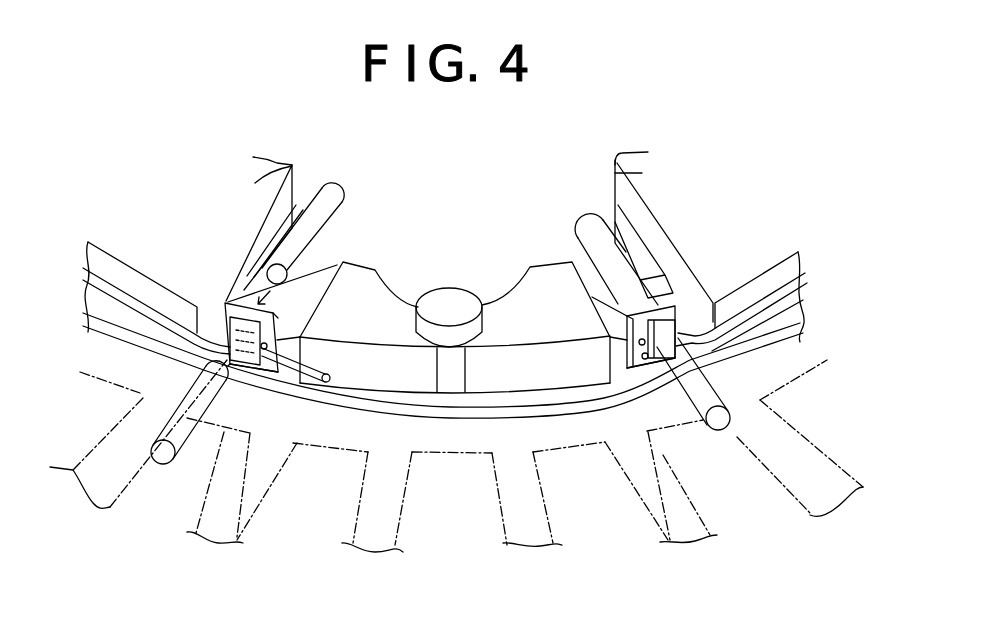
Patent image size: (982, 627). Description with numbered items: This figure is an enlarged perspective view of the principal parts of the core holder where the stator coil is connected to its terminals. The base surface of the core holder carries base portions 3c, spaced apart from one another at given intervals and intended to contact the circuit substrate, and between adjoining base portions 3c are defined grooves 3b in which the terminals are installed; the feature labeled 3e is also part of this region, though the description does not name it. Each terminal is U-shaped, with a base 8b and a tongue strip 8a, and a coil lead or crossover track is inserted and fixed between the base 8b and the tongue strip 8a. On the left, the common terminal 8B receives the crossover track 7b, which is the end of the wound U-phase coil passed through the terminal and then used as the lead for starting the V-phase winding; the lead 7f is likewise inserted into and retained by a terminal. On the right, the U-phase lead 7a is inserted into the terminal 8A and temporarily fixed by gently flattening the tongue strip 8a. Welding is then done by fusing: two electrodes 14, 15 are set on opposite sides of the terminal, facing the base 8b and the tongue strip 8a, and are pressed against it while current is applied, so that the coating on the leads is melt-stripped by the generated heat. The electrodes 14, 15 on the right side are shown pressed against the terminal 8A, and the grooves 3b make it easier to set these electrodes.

The groove 3b is at (298, 312).
The base portion 3c is at (291, 170).
The cylindrical boss 3e is at (447, 310).
The electrode 14 is at (333, 210).
The electrode 15 is at (180, 406).
The lead 7a is at (772, 300).
The crossover track 7b is at (86, 322).
The lead 7f is at (88, 320).
The terminal 8A is at (675, 292).
The common terminal 8B is at (226, 300).
The tongue strip 8a is at (227, 306).
The base 8b is at (268, 372).